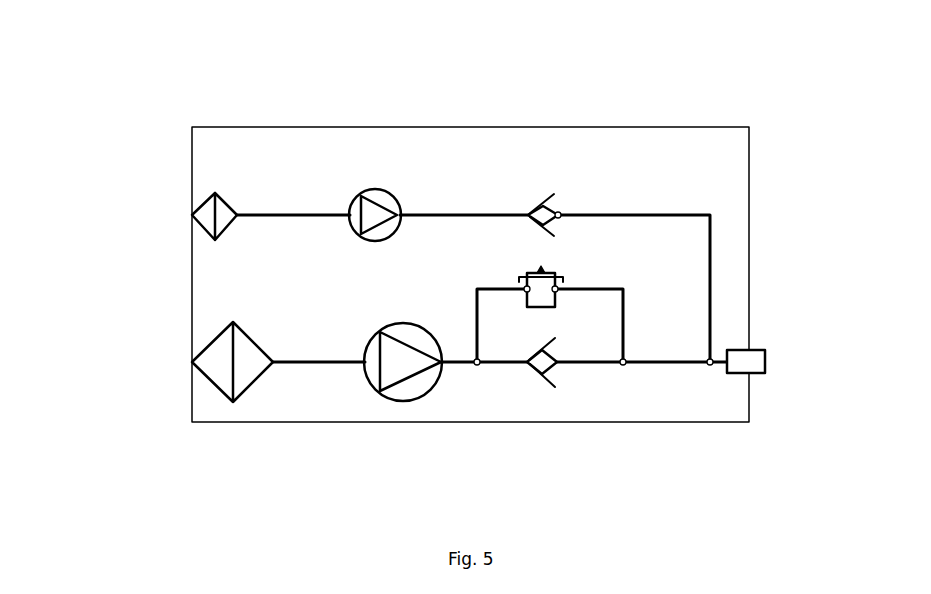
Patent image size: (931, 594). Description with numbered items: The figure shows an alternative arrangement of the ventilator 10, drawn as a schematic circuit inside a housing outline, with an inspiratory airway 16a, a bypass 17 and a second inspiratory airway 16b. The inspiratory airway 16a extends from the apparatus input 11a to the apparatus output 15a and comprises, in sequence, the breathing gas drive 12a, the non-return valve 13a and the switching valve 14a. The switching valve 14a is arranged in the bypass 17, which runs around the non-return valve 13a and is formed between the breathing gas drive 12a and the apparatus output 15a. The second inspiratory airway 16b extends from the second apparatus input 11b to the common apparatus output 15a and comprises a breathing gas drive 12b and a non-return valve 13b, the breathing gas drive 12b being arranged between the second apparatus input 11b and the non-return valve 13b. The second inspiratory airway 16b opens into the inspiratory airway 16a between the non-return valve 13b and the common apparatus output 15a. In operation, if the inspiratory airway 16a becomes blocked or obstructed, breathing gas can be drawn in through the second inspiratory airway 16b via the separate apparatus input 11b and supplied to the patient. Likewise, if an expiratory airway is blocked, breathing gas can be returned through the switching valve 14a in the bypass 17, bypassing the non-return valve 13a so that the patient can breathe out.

The ventilator 10 is at (160, 210).
The apparatus input 11a is at (193, 360).
The second apparatus input 11b is at (205, 205).
The breathing gas drive 12a is at (400, 401).
The breathing gas drive 12b is at (357, 197).
The non-return valve 13a is at (548, 376).
The non-return valve 13b is at (530, 205).
The switching valve 14a is at (556, 307).
The apparatus output 15a is at (767, 373).
The inspiratory airway 16a is at (304, 369).
The second inspiratory airway 16b is at (638, 216).
The bypass 17 is at (624, 314).